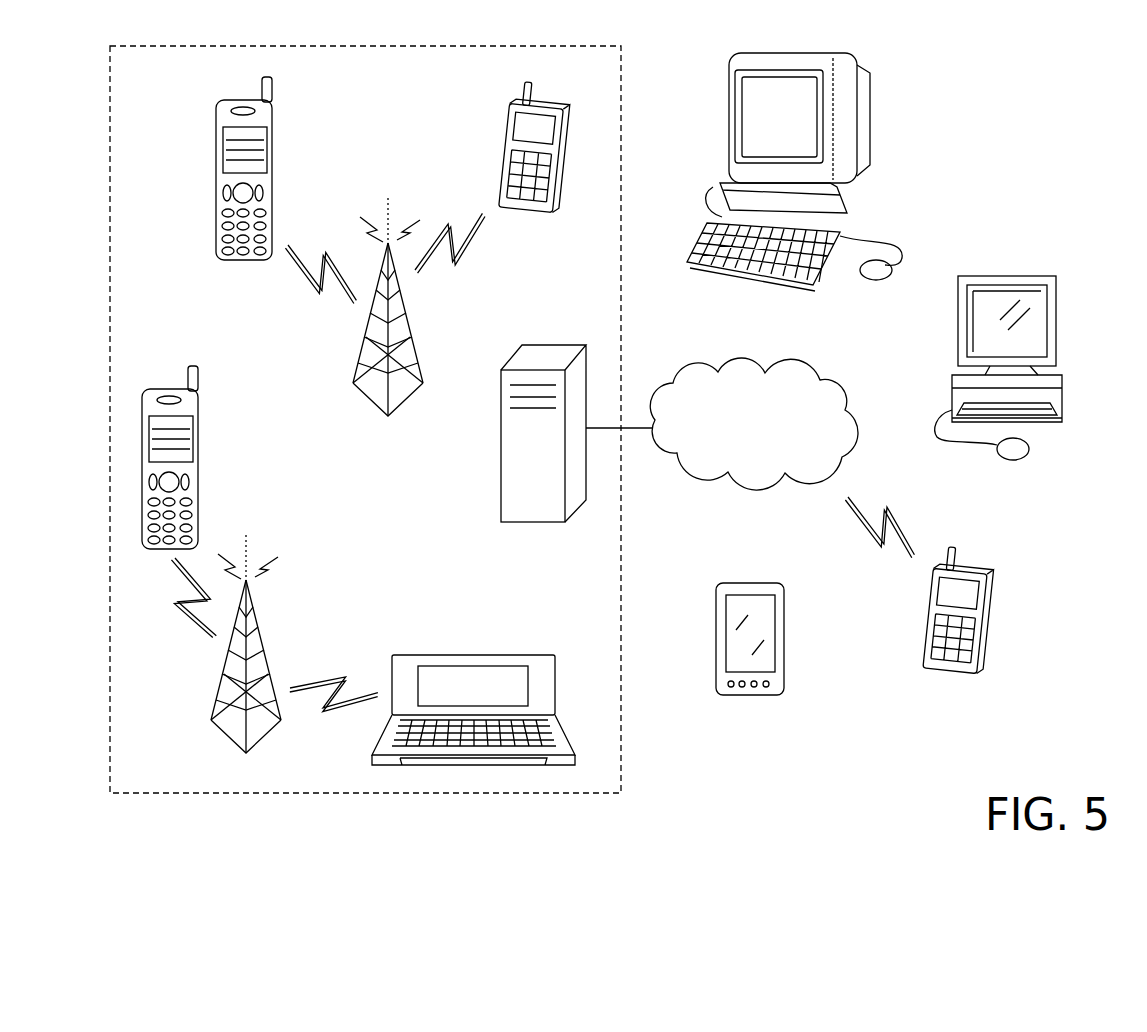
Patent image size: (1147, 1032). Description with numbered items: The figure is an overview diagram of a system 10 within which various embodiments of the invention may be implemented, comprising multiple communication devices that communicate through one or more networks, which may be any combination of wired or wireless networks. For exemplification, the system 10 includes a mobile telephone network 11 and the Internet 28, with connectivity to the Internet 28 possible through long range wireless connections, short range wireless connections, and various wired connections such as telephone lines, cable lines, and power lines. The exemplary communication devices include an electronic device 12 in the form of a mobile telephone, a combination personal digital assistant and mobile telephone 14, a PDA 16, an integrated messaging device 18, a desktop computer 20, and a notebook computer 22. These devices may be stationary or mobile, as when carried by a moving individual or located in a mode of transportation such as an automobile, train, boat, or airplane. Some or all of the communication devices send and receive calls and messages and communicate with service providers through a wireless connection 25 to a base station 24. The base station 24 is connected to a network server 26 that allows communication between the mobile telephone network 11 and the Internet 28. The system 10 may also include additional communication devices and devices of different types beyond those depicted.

The system 10 is at (1046, 527).
The mobile telephone network 11 is at (150, 86).
The electronic device 12 is at (273, 150).
The combination personal digital assistant (PDA) and mobile telephone 14 is at (472, 662).
The PDA 16 is at (786, 632).
The integrated messaging device (IMD) 18 is at (503, 158).
The desktop computer 20 is at (870, 106).
The notebook computer 22 is at (1008, 276).
The base station 24 is at (404, 318).
The wireless connection 25 is at (192, 622).
The network server 26 is at (500, 447).
The Internet 28 is at (800, 368).